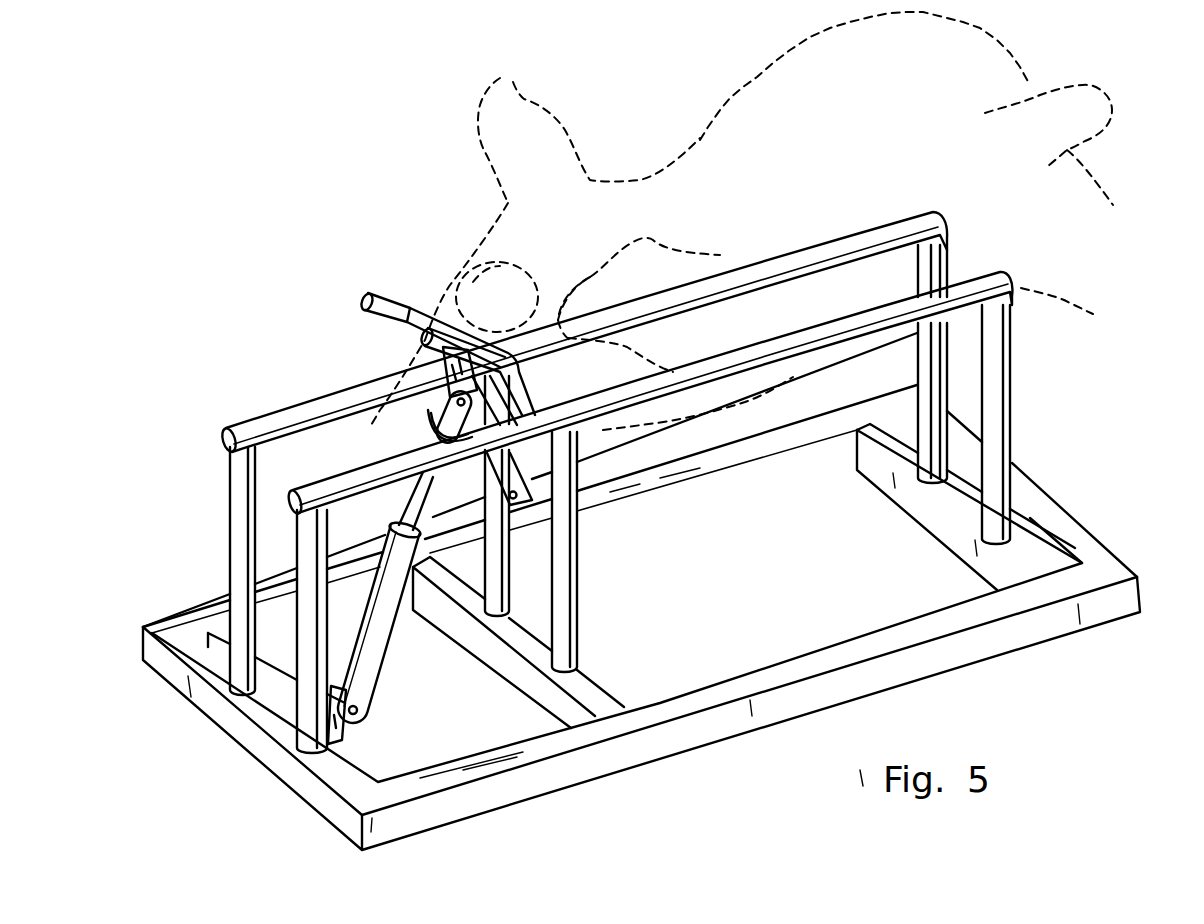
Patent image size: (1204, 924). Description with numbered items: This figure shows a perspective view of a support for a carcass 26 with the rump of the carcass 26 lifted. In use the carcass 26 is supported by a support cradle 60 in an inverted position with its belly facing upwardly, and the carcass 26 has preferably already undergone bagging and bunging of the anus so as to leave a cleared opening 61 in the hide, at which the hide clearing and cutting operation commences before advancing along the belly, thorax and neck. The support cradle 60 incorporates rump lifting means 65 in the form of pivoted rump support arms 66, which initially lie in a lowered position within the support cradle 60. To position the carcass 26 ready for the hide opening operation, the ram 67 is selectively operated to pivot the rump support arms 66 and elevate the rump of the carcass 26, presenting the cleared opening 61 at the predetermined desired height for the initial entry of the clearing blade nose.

The carcass 26 is at (688, 138).
The support cradle 60 is at (263, 398).
The cleared opening 61 is at (479, 237).
The rump lifting means 65 is at (384, 608).
The rump support arms 66 is at (413, 352).
The ram 67 is at (395, 563).